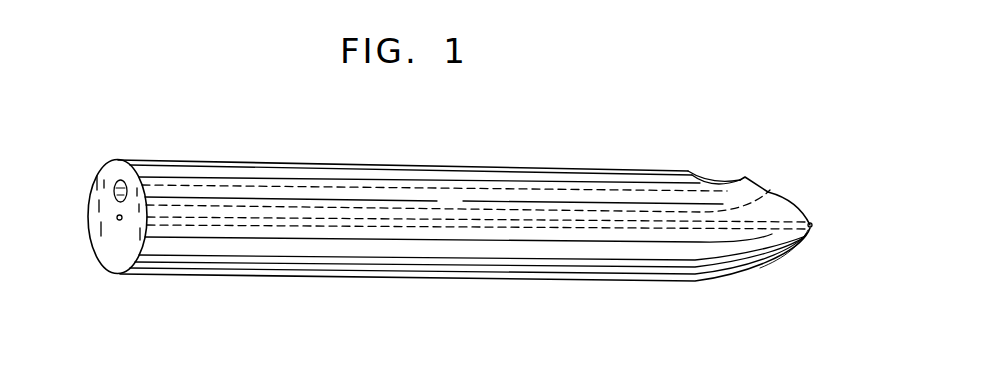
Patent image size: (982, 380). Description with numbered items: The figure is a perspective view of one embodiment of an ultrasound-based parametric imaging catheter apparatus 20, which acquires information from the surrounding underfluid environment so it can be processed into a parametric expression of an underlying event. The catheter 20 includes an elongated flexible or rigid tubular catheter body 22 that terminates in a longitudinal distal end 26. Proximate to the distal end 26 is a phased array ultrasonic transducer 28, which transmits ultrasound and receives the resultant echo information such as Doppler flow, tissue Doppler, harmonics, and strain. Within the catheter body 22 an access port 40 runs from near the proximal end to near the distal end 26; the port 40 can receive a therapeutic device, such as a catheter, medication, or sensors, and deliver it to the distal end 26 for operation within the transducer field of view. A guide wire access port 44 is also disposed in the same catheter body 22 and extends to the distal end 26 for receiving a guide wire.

The catheter apparatus 20 is at (647, 106).
The tubular catheter body 22 is at (116, 263).
The distal end 26 is at (808, 237).
The phased array ultrasonic transducer 28 is at (715, 178).
The access port 40 is at (120, 180).
The guide wire access port 44 is at (117, 220).